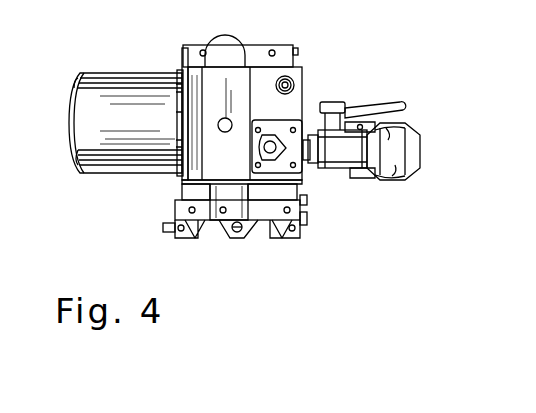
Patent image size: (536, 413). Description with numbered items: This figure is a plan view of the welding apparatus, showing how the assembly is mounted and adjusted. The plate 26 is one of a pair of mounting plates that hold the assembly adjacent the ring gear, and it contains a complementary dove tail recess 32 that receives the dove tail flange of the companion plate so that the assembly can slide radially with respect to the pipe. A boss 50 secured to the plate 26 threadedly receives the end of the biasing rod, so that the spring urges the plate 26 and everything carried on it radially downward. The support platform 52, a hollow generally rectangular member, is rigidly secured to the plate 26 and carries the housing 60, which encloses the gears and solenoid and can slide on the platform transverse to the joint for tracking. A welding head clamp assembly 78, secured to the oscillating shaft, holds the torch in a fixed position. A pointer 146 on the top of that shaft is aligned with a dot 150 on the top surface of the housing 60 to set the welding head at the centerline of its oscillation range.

The plate 26 is at (303, 230).
The dove tail recess 32 is at (270, 228).
The boss 50 is at (238, 232).
The support platform 52 is at (262, 50).
The housing 60 is at (297, 75).
The welding head clamp assembly 78 is at (413, 179).
The pointer 146 is at (283, 140).
The dot 150 is at (303, 168).